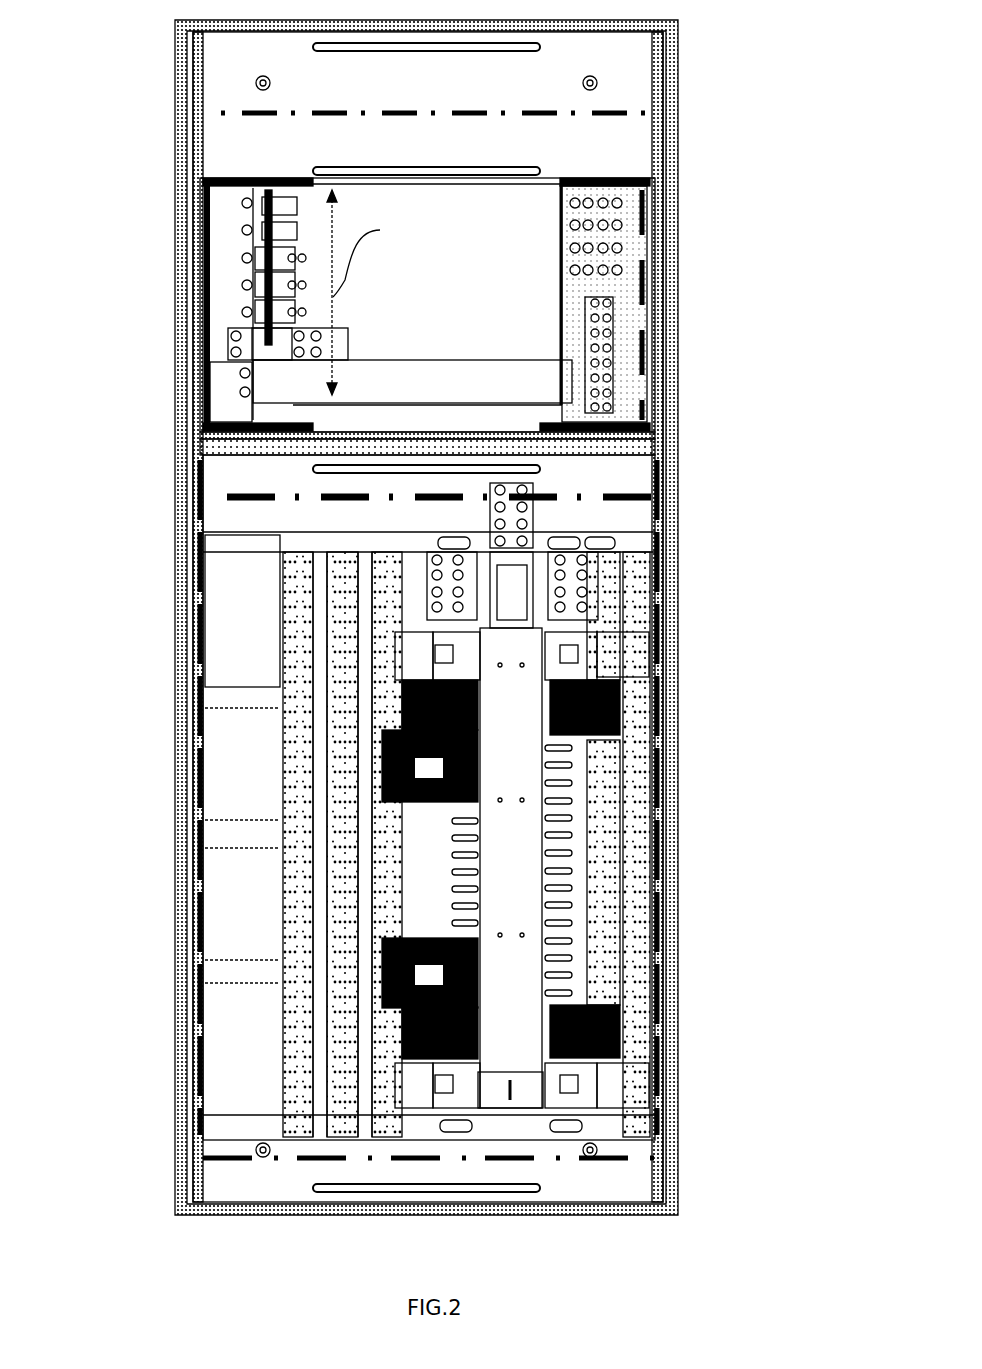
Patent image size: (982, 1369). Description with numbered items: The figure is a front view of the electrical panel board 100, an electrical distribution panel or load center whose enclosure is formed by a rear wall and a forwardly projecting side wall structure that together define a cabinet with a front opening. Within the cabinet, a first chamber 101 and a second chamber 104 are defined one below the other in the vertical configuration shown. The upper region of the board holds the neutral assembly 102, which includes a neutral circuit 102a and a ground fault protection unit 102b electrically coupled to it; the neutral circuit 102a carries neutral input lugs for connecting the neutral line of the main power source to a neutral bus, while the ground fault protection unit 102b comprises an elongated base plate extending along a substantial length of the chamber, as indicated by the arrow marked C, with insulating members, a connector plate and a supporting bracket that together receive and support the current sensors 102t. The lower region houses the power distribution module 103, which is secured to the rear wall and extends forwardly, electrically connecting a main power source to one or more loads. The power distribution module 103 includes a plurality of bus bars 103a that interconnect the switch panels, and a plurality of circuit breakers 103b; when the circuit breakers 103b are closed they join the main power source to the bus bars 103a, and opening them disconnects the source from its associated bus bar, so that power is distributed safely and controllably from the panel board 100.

The electrical panel board 100 is at (728, 99).
The first chamber 101 is at (262, 74).
The neutral assembly 102 is at (434, 314).
The current sensors 102t is at (237, 260).
The neutral circuit 102a is at (615, 338).
The ground fault protection unit 102b is at (217, 383).
The power distribution module 103 is at (509, 797).
The bus bars 103a is at (530, 818).
The circuit breakers 103b is at (612, 675).
The second chamber 104 is at (265, 1192).